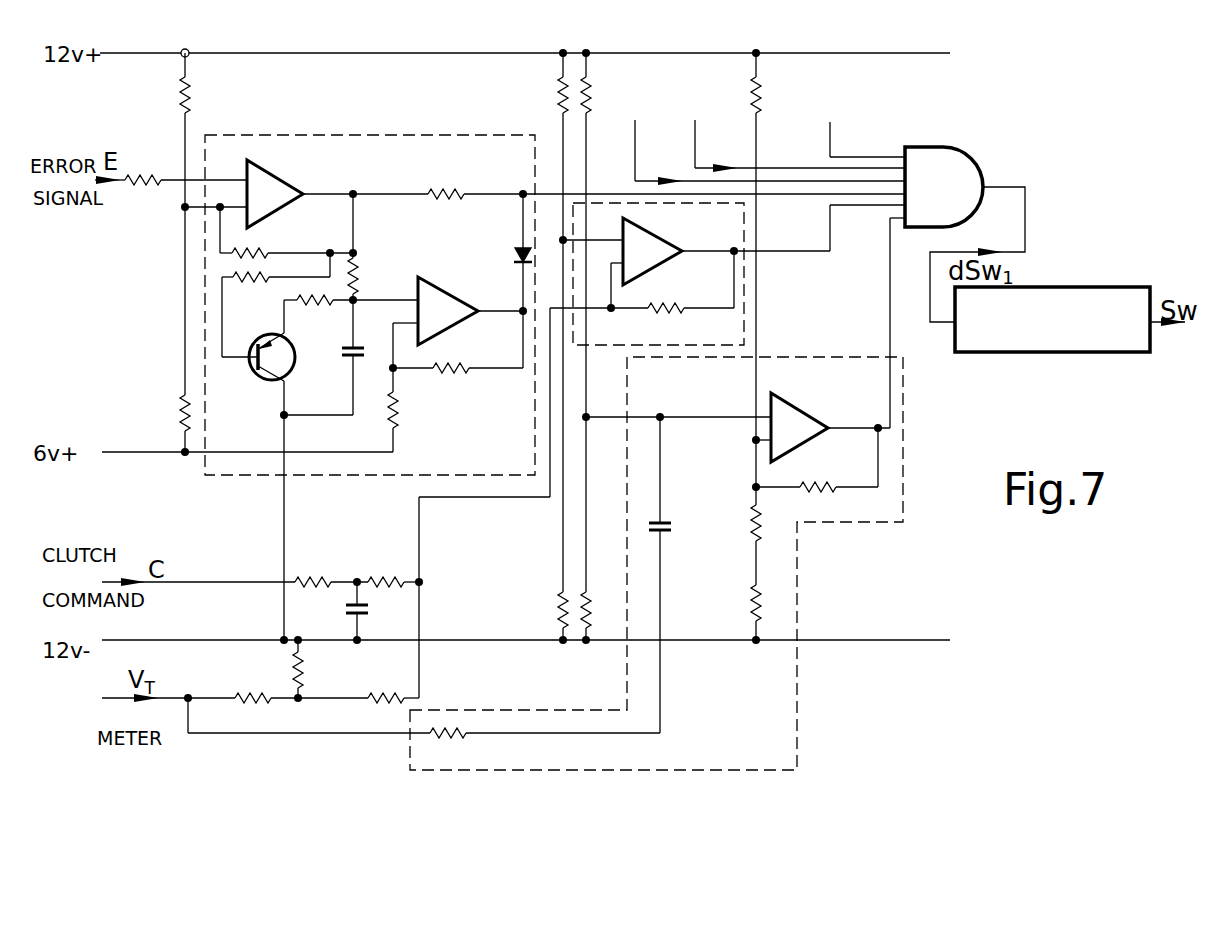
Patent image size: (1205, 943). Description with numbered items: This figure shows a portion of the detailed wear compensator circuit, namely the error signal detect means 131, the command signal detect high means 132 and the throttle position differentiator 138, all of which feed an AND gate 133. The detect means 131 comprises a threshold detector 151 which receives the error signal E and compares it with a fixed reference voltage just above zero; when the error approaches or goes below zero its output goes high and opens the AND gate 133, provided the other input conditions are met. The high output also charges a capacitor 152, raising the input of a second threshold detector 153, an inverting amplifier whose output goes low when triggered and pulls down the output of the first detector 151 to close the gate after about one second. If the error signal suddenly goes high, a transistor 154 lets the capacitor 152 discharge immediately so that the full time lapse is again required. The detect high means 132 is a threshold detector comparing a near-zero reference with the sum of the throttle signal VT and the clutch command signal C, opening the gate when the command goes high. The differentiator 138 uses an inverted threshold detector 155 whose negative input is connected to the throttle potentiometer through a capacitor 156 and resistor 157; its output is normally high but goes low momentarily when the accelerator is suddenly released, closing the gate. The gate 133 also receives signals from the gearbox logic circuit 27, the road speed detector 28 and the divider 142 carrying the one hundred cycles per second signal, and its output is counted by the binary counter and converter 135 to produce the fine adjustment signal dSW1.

The gearbox logic circuit 27 is at (761, 138).
The road speed detector 28 is at (792, 131).
The detect means 131 is at (372, 135).
The detect high means 132 is at (625, 204).
The AND gate 133 is at (930, 146).
The binary counter and analogue converter 135 is at (1033, 353).
The throttle position differentiator 138 is at (690, 765).
The divider 142 is at (855, 124).
The threshold detector 151 is at (283, 186).
The capacitor 152 is at (348, 358).
The second threshold detector 153 is at (447, 292).
The transistor 154 is at (265, 382).
The inverted threshold detector 155 is at (800, 407).
The capacitor 156 is at (665, 520).
The resistor 157 is at (460, 742).